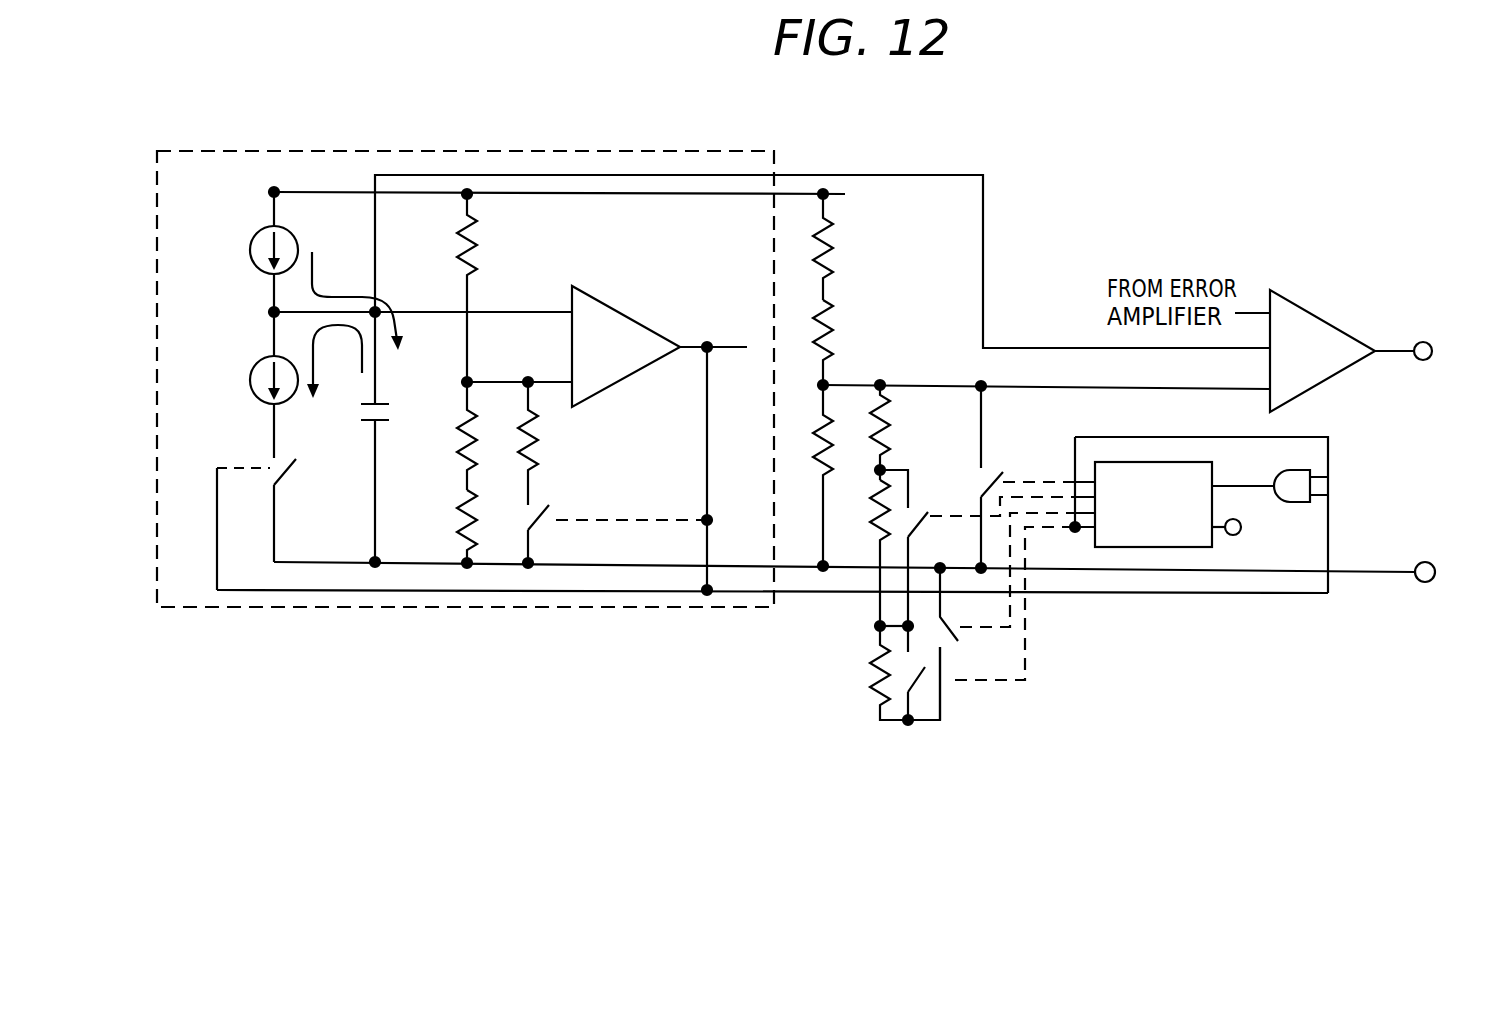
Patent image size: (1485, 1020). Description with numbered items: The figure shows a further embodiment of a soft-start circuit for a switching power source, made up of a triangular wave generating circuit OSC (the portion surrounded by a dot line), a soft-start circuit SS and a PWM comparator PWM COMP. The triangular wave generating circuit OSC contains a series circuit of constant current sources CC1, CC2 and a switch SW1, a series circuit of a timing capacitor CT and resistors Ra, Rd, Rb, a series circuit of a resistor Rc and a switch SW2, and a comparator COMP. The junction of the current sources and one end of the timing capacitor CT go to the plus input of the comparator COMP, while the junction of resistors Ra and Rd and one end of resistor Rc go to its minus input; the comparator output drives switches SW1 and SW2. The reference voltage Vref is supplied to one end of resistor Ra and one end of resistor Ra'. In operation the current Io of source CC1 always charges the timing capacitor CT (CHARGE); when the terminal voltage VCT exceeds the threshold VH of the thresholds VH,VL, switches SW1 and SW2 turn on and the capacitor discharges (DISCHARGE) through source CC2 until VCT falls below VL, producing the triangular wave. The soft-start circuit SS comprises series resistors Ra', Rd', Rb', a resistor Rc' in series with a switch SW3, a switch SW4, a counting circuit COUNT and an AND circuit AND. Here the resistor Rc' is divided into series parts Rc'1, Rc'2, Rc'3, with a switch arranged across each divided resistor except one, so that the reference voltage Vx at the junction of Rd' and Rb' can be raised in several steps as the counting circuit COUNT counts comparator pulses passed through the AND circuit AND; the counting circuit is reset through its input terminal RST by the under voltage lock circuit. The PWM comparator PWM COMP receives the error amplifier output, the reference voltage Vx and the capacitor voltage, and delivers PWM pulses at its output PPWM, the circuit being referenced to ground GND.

The triangular wave generating circuit OSC is at (452, 152).
The output voltage of reference voltage generating circuit Vref is at (297, 192).
The constant current source CC1 is at (238, 246).
The current value of constant current source CC1 Io is at (245, 252).
The constant current source CC2 is at (237, 381).
The charge current path CHARGE is at (349, 282).
The discharge current path DISCHARGE is at (326, 389).
The switch SW1 is at (290, 472).
The timing capacitor CT is at (381, 424).
The terminal voltage of timing capacitor VCT is at (492, 310).
The threshold voltages of comparator VH,VL is at (488, 378).
The resistor Ra is at (501, 288).
The resistor Rd is at (444, 429).
The resistor Rb is at (444, 509).
The resistor Rc is at (566, 443).
The switch SW2 is at (548, 522).
The comparator COMP is at (618, 298).
The soft-start circuit SS is at (996, 143).
The resistor Ra' is at (860, 247).
The resistor Rd' is at (861, 342).
The resistor Rb' is at (806, 470).
The reference voltage of PWM comparator Vx is at (906, 384).
The divided resistor Rc'1 is at (923, 432).
The divided resistor Rc'2 is at (847, 565).
The divided resistor Rc'3 is at (861, 675).
The resistor Rc' is at (906, 708).
The switch SW3 is at (960, 640).
The switch SW4 is at (1000, 470).
The counting circuit COUNT is at (1125, 462).
The AND circuit AND is at (1330, 495).
The input terminal of counting circuit RST is at (1195, 547).
The ground terminal GND is at (1430, 583).
The PWM comparator PWM COMP is at (1317, 315).
The PWM output terminal PPWM is at (1433, 342).